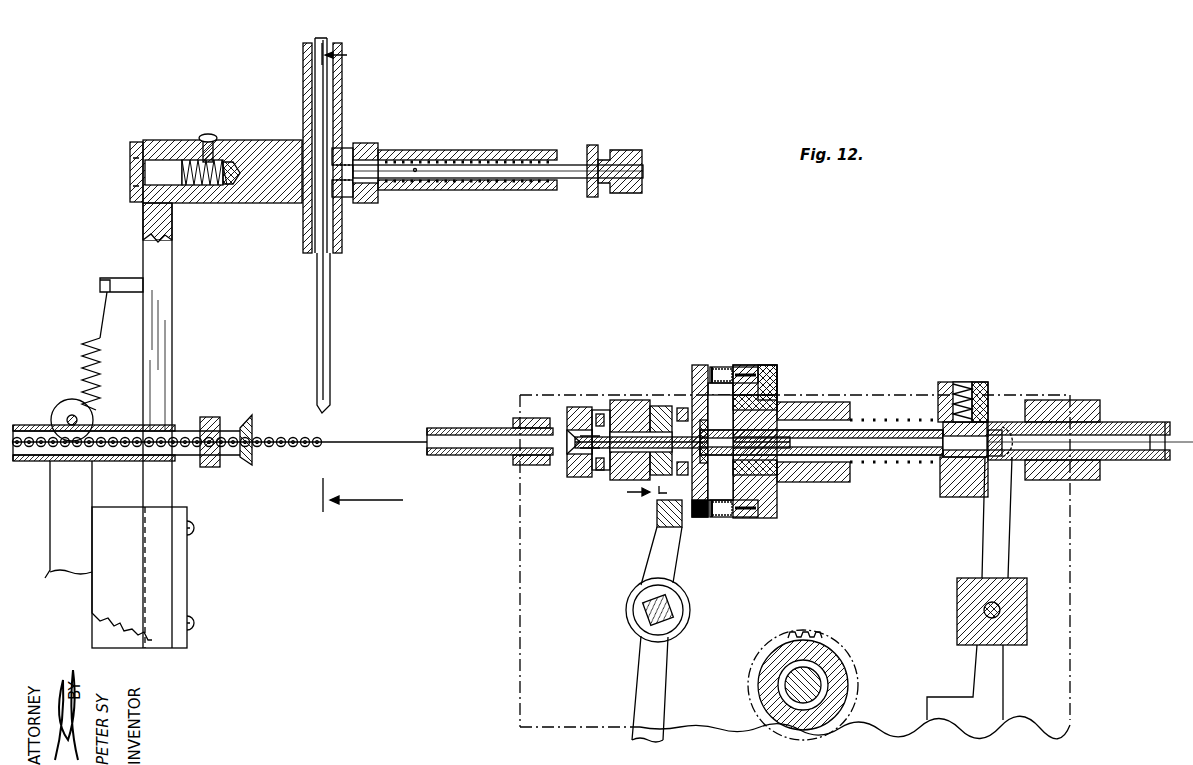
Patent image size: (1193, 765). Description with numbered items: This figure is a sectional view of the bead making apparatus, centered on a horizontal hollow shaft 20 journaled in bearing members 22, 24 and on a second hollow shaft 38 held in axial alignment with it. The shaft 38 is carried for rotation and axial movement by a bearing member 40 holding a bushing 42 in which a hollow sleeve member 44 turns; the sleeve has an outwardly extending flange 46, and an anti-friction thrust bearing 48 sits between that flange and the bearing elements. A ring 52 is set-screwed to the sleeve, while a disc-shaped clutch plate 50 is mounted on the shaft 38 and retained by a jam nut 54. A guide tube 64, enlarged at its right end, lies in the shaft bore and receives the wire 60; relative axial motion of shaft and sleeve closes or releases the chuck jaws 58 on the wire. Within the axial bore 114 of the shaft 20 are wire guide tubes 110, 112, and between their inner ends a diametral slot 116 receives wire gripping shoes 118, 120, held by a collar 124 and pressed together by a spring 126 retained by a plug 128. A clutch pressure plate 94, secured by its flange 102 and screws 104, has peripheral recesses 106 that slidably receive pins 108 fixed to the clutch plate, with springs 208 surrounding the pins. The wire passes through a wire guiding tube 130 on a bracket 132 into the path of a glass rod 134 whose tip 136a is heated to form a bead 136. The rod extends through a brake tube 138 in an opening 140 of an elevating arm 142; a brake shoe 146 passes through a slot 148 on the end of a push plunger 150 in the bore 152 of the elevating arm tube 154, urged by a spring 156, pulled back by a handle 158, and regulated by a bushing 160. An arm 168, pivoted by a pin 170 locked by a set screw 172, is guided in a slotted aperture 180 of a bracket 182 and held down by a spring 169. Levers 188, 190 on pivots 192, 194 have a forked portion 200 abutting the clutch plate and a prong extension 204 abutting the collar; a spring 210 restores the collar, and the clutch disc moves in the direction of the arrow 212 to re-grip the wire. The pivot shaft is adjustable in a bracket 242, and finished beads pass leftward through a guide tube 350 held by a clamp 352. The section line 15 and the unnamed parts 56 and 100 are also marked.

The section line 15- 15 is at (350, 55).
The hollow shaft 20 is at (1118, 420).
The bearing member 22 is at (1085, 400).
The bearing member 24 is at (830, 402).
The second hollow shaft 38 is at (640, 405).
The bearing member 40 is at (615, 500).
The bushing 42 is at (655, 400).
The hollow sleeve member 44 is at (625, 385).
The outwardly extending flange 46 is at (578, 405).
The anti-friction thrust bearing 48 is at (600, 470).
The clutch plate 50 is at (697, 365).
The ring 52 is at (682, 406).
The jam nut 54 is at (718, 420).
The passage 56 is at (580, 450).
The chuck jaws 58 is at (570, 425).
The wire 60 is at (392, 440).
The guide tube 64 is at (700, 520).
The clutch pressure plate 94 is at (778, 366).
The hub body 100 is at (760, 480).
The flange 102 is at (778, 390).
The screws 104 is at (770, 365).
The grooves or recesses 106 is at (738, 365).
The pins 108 is at (712, 365).
The wire guide tube 110 is at (900, 458).
The wire guide tube 112 is at (1130, 462).
The axial bore 114 is at (1160, 460).
The diametral slot 116 is at (932, 458).
The wire gripping shoe 118 is at (965, 497).
The wire gripping shoe 120 is at (940, 385).
The collar 124 is at (975, 395).
The spring 126 is at (985, 395).
The plug 128 is at (963, 382).
The wire guiding tube 130 is at (467, 428).
The bracket 132 is at (528, 467).
The glass rod 134 is at (327, 300).
The bead 136 is at (330, 390).
The tip 136a is at (300, 450).
The brake tube 138 is at (343, 235).
The opening 140 is at (288, 200).
The elevating housing or arm 142 is at (260, 140).
The brake shoe 146 is at (350, 145).
The slot 148 is at (370, 152).
The push plunger 150 is at (572, 178).
The bore 152 is at (490, 158).
The elevating arm tube 154 is at (472, 149).
The spring 156 is at (478, 192).
The handle 158 is at (642, 162).
The bushing 160 is at (602, 122).
The arm 168 is at (172, 350).
The spring 169 is at (88, 355).
The pin 170 is at (132, 180).
The set screw 172 is at (205, 135).
The slotted aperture 180 is at (144, 510).
The bracket 182 is at (188, 565).
The lever 188 is at (665, 660).
The lever 190 is at (1005, 530).
The pivot 192 is at (665, 610).
The pivot 194 is at (998, 606).
The forked portion 200 is at (657, 505).
The prong extension 204 is at (1000, 450).
The springs 208 is at (722, 520).
The spring 210 is at (875, 465).
The arrow 212 is at (633, 504).
The bracket 242 is at (1018, 640).
The guide tube 350 is at (130, 422).
The clamp 352 is at (52, 494).